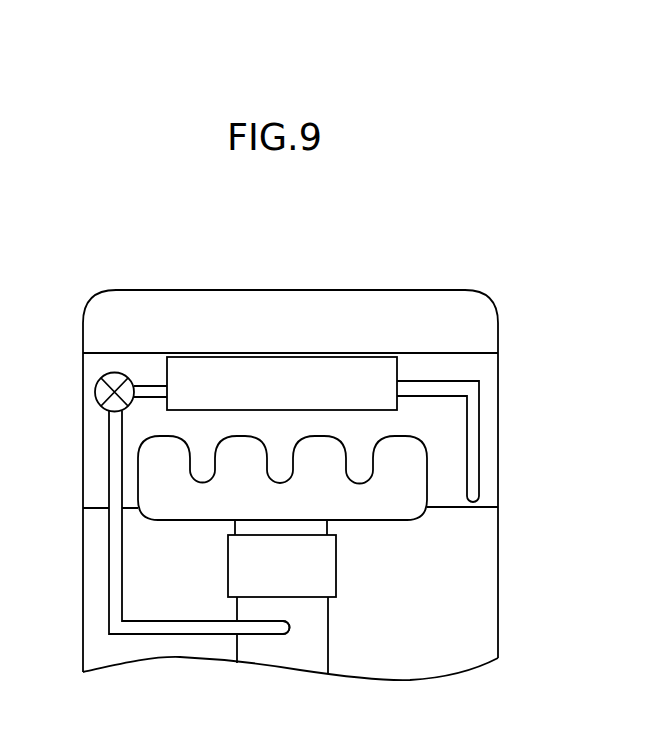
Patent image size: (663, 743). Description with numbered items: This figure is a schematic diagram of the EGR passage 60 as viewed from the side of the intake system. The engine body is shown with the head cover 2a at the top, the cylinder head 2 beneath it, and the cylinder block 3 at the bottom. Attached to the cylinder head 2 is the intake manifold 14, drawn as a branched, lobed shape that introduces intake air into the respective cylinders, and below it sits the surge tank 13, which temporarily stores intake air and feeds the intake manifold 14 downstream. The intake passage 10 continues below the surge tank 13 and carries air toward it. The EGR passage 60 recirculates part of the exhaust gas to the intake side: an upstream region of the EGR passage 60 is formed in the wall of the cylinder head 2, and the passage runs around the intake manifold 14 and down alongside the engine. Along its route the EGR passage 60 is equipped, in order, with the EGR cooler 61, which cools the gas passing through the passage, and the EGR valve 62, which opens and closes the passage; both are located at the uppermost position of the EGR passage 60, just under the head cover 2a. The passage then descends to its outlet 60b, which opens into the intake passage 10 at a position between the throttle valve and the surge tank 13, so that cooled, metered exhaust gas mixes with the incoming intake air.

The cylinder head 2 is at (83, 457).
The head cover 2a is at (221, 310).
The cylinder block 3 is at (90, 612).
The intake passage 10 is at (322, 630).
The surge tank 13 is at (322, 567).
The intake manifold 14 is at (403, 507).
The EGR passage 60 is at (117, 534).
The outlet of the EGR passage 60b is at (288, 630).
The EGR cooler 61 is at (289, 382).
The EGR valve 62 is at (95, 385).